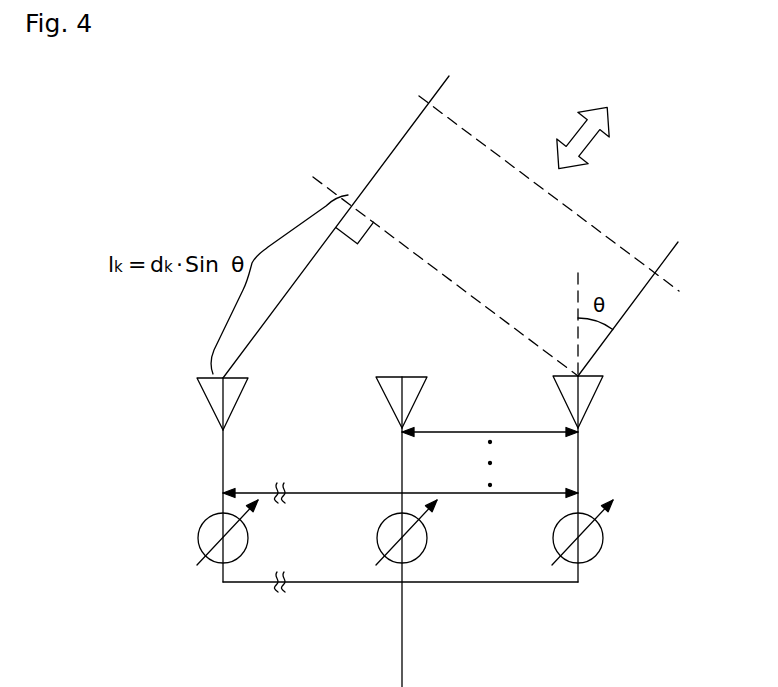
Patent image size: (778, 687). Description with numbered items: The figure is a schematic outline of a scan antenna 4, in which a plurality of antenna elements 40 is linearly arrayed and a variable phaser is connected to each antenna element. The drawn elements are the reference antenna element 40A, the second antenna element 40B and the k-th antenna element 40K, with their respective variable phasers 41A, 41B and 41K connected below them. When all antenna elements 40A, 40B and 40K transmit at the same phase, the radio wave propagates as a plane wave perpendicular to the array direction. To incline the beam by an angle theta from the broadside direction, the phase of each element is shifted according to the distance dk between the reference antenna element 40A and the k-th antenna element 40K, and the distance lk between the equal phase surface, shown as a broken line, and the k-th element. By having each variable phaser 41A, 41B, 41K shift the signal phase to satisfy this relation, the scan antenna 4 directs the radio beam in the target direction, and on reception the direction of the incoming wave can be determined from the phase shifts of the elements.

The scan antenna 4 is at (422, 531).
The antenna element 40 is at (637, 402).
The antenna element 40A is at (592, 398).
The antenna element 40B is at (391, 408).
The antenna element 40K is at (212, 408).
The variable phaser 41A is at (603, 537).
The variable phaser 41B is at (377, 541).
The variable phaser 41K is at (198, 541).